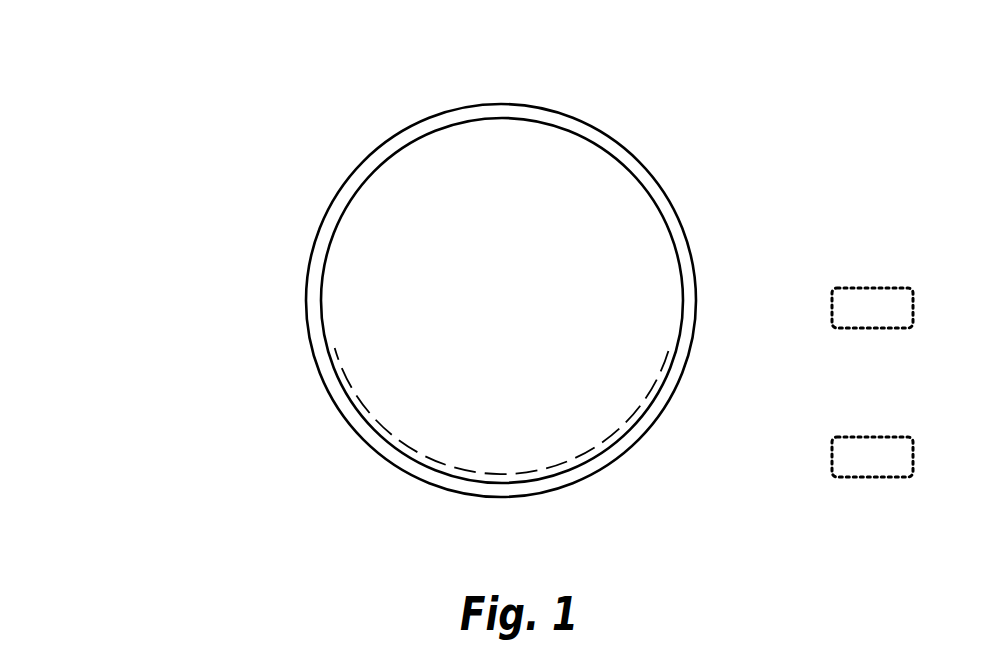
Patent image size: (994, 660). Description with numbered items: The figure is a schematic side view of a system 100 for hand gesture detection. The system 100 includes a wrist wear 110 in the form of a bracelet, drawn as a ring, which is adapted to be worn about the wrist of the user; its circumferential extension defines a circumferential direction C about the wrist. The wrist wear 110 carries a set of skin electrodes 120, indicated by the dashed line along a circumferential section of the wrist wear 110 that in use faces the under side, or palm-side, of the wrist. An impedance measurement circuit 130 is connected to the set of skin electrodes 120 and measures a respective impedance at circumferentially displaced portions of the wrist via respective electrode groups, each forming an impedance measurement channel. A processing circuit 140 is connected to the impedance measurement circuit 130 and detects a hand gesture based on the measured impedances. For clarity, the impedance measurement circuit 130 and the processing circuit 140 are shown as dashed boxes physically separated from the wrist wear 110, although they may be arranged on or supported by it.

The system 100 is at (108, 89).
The wrist wear 110 is at (270, 170).
The set of skin electrodes 120 is at (386, 455).
The impedance measurement circuit 130 is at (852, 288).
The processing circuit 140 is at (852, 437).
The circumferential direction C is at (303, 393).